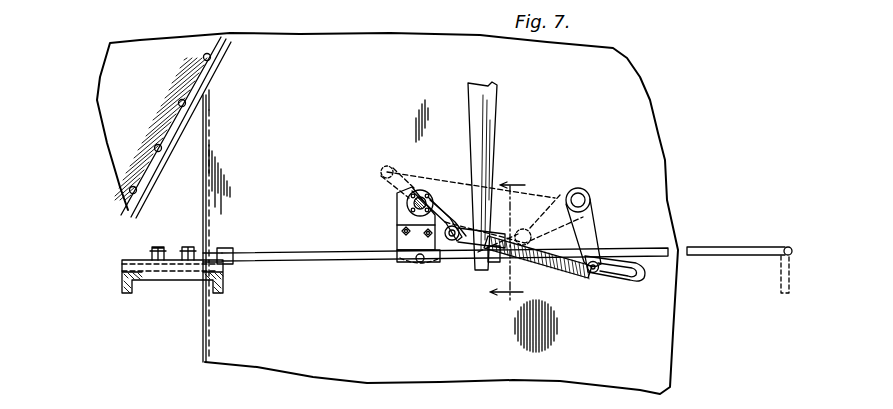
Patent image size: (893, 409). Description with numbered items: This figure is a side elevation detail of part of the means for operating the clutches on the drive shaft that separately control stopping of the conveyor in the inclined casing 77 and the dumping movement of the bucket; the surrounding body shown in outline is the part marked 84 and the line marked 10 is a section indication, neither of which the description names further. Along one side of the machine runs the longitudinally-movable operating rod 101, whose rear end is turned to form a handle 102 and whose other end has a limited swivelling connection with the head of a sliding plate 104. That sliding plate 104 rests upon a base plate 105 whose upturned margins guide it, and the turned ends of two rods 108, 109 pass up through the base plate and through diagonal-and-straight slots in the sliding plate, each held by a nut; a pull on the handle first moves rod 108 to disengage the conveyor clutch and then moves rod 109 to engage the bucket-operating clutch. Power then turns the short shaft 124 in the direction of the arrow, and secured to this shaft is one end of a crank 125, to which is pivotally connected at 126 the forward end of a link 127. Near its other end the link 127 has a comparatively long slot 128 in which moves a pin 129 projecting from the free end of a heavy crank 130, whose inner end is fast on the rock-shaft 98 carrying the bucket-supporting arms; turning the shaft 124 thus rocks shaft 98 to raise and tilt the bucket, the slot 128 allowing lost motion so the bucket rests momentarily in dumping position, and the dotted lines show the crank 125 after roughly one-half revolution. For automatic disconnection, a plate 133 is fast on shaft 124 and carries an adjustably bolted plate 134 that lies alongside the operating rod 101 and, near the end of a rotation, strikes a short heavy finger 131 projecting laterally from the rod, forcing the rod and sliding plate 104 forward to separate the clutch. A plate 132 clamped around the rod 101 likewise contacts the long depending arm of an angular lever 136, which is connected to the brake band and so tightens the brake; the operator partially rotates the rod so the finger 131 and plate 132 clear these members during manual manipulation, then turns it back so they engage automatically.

The panel 84 is at (651, 105).
The conveyor casing 77 is at (130, 212).
The sliding plate 104 is at (122, 262).
The base plate 105 is at (122, 272).
The rod 108 is at (188, 280).
The rod 109 is at (160, 280).
The operating rod 101 is at (675, 250).
The handle 102 is at (780, 256).
The angular lever 136 is at (496, 130).
The section line 10 is at (507, 238).
The short shaft 124 is at (407, 203).
The plate 133 is at (398, 232).
The plate 134 is at (395, 255).
The finger 131 is at (416, 260).
The crank 125 is at (453, 225).
The pivot 126 is at (455, 241).
The link 127 is at (467, 247).
The plate 132 is at (537, 260).
The rock-shaft 98 is at (592, 200).
The heavy crank 130 is at (585, 224).
The slot 128 is at (627, 280).
The pin 129 is at (590, 274).